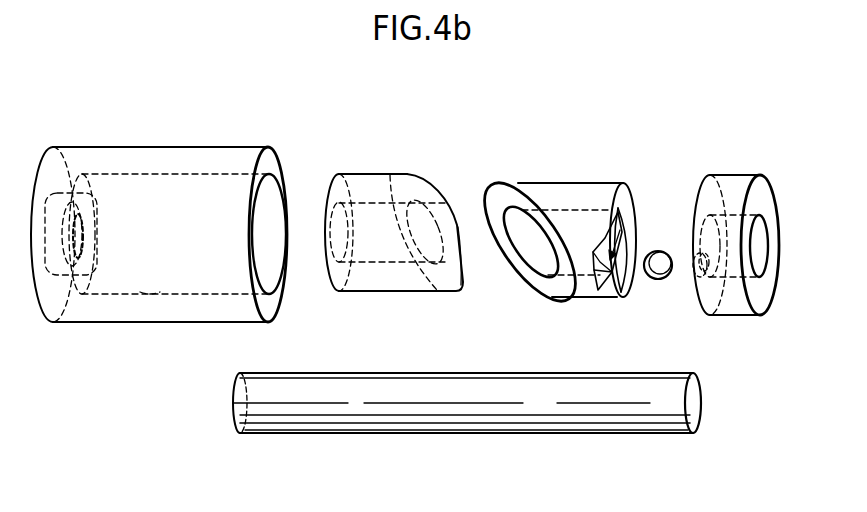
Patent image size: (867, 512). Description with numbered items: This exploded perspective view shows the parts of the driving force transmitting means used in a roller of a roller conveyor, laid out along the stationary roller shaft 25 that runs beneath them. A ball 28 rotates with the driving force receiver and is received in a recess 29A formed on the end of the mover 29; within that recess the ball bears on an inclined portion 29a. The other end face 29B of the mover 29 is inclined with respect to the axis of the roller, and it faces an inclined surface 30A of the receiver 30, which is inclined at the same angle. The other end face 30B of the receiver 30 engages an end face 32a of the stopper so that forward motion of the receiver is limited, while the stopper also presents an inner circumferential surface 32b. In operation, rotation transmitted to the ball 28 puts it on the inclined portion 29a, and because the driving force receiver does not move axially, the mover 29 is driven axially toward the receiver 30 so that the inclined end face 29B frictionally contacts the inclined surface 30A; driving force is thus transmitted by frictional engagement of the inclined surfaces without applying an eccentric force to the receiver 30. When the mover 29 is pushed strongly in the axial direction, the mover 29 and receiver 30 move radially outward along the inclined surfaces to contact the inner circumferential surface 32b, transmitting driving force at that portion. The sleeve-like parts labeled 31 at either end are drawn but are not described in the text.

The stationary roller shaft 25 is at (468, 420).
The ball 28 is at (657, 250).
The mover 29 is at (564, 209).
The recess 29A is at (622, 200).
The inclined portion 29a is at (613, 290).
The end face 29B is at (500, 180).
The receiver 30 is at (392, 202).
The inclined surface 30A is at (440, 288).
The end face 30B is at (326, 287).
The cylindrical sleeve 31 is at (405, 211).
The end face 32a is at (80, 160).
The inner circumferential surface 32b is at (148, 290).